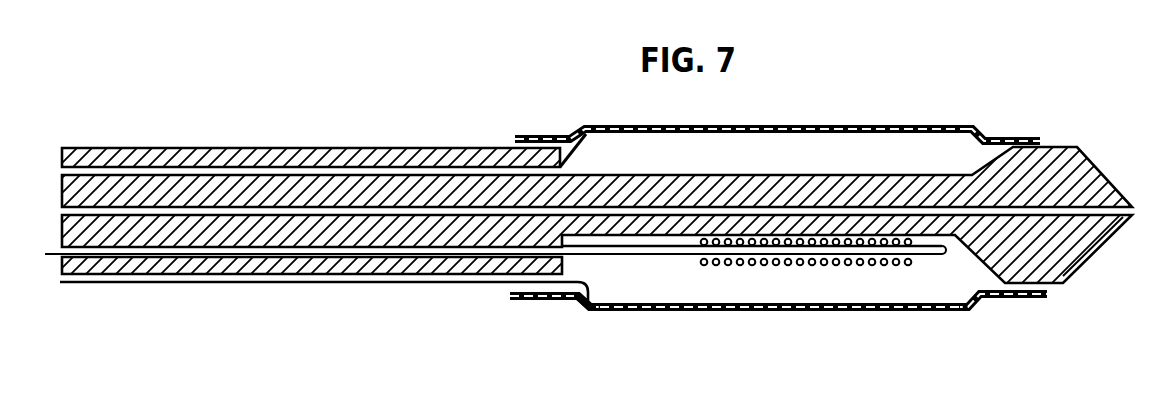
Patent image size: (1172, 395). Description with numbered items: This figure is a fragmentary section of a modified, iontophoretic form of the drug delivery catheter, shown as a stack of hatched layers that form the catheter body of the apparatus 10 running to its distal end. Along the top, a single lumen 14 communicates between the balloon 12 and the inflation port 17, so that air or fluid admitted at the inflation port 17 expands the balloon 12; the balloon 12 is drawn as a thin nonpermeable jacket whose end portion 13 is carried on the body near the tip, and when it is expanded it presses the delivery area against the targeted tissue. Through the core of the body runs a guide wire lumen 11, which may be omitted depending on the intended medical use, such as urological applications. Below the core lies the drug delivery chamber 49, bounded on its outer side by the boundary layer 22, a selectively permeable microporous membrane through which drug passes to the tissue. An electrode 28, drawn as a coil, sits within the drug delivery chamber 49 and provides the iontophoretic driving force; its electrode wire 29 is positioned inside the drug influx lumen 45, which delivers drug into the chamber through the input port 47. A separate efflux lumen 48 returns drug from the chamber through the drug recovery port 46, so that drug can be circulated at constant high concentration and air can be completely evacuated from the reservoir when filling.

The probe body 10 is at (391, 214).
The guide wire lumen 11 is at (1112, 193).
The balloon 12 is at (773, 124).
The sheath end portion 13 is at (949, 146).
The single lumen 14 is at (277, 171).
The inflation port 17 is at (599, 131).
The boundary layer 22 is at (818, 309).
The electrode 28 is at (858, 263).
The electrode wire 29 is at (230, 255).
The influx lumen 45 is at (393, 256).
The drug recovery port 46 is at (585, 310).
The input port 47 is at (948, 252).
The efflux lumen 48 is at (479, 278).
The drug delivery chamber 49 is at (693, 287).